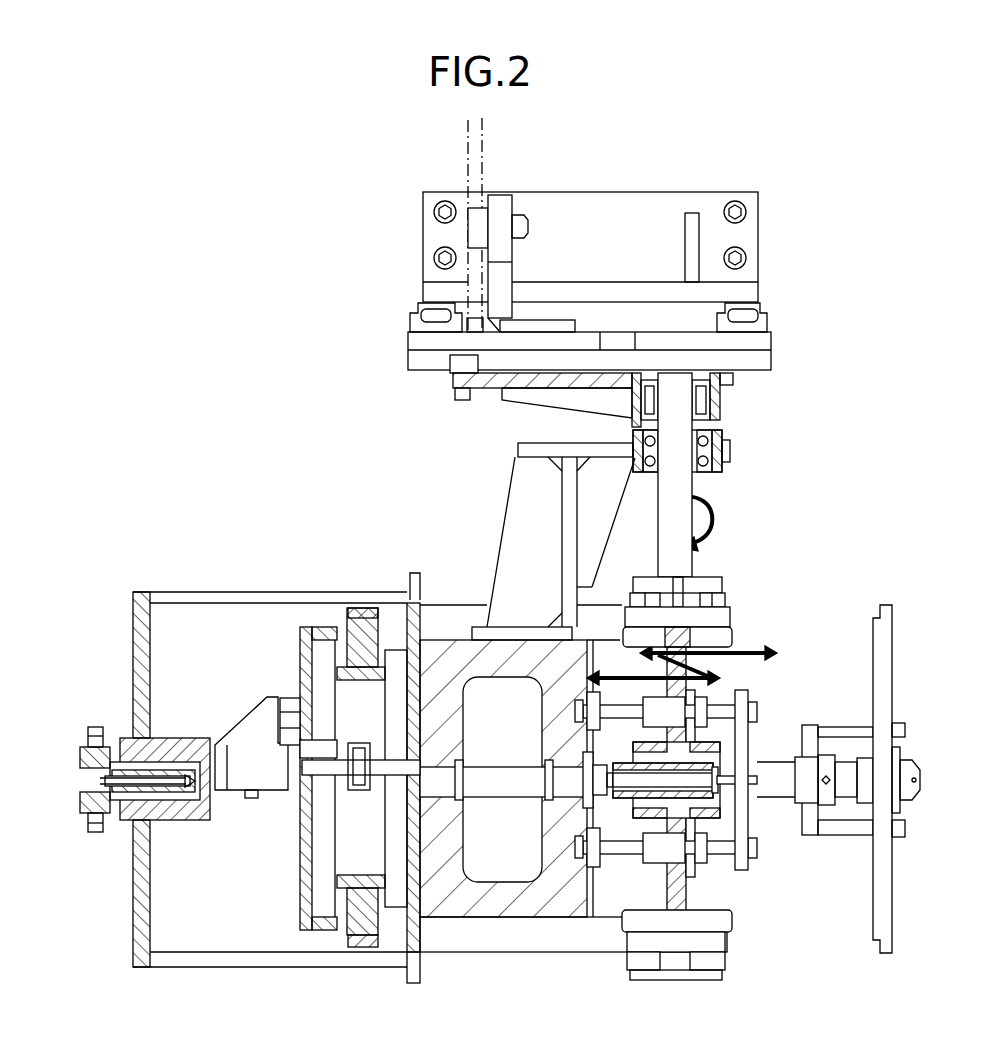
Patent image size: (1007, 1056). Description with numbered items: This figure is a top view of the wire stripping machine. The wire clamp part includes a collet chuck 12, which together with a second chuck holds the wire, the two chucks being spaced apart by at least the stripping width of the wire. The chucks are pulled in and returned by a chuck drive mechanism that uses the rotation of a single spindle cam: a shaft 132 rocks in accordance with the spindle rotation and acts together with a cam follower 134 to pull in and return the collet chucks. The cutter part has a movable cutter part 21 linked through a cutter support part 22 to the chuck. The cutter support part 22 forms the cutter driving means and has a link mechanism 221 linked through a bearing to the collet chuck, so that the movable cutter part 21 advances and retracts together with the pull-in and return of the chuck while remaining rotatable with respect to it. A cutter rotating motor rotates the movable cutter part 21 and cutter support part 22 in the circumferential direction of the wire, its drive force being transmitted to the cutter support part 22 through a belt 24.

The chuck 12 is at (135, 735).
The movable cutter part 21 is at (243, 767).
The cutter support part 22 is at (337, 620).
The link mechanism 221 is at (360, 750).
The belt 24 is at (363, 610).
The shaft 132 is at (697, 487).
The cam follower 134 is at (723, 633).